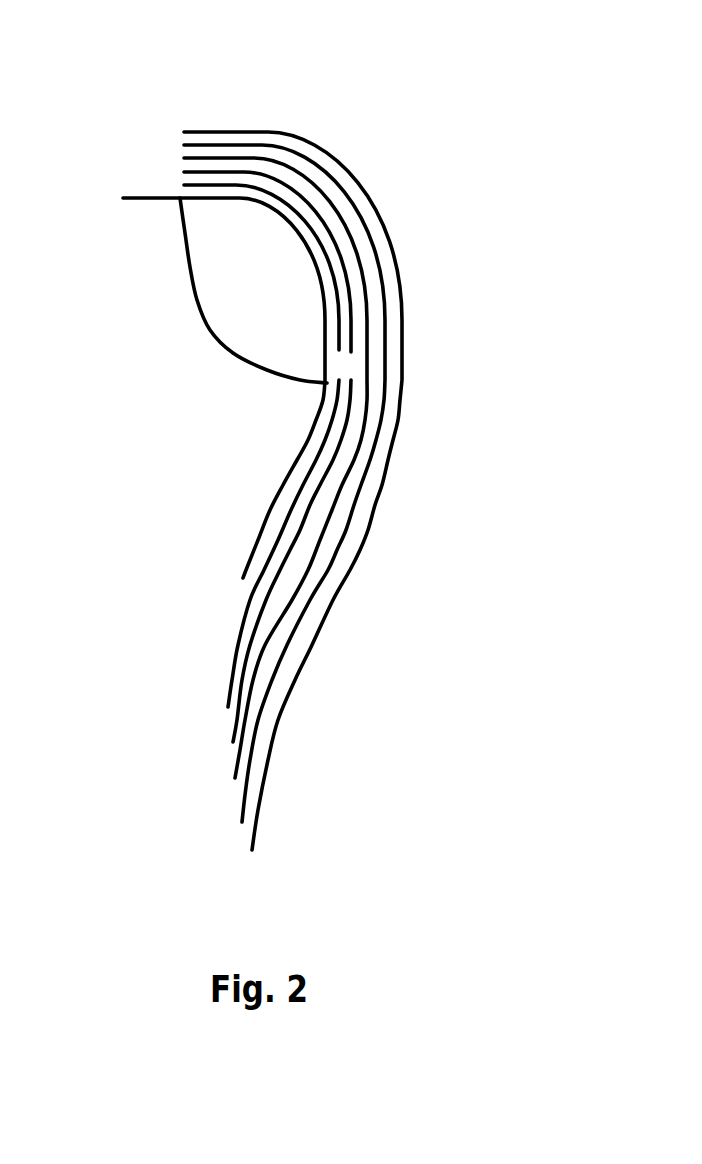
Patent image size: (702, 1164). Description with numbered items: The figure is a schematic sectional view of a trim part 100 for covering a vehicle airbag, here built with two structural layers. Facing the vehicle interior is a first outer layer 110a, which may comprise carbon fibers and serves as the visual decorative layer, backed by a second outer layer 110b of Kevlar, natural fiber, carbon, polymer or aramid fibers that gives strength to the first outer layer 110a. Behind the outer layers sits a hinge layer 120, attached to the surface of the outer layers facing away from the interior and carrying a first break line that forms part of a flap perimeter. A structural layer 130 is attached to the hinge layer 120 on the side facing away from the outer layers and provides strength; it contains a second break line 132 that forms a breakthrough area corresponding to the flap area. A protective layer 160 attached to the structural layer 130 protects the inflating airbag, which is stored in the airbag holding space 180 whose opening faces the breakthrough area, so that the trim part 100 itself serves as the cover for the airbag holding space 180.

The trim part 100 is at (170, 100).
The first outer layer 110a is at (357, 167).
The second outer layer 110b is at (373, 260).
The hinge layer 120 is at (358, 453).
The structural layer 130 is at (293, 533).
The second break line 132 is at (364, 367).
The protective layer 160 is at (137, 203).
The airbag holding space 180 is at (213, 333).